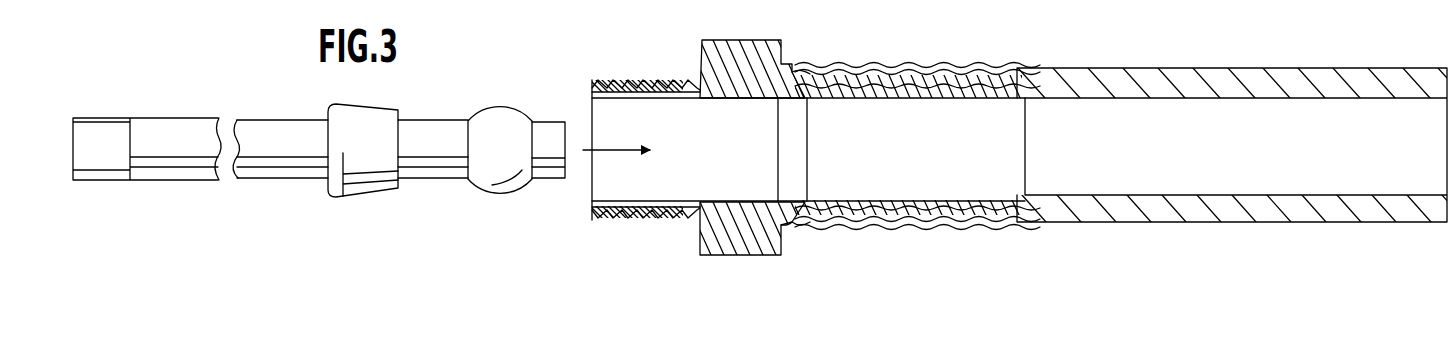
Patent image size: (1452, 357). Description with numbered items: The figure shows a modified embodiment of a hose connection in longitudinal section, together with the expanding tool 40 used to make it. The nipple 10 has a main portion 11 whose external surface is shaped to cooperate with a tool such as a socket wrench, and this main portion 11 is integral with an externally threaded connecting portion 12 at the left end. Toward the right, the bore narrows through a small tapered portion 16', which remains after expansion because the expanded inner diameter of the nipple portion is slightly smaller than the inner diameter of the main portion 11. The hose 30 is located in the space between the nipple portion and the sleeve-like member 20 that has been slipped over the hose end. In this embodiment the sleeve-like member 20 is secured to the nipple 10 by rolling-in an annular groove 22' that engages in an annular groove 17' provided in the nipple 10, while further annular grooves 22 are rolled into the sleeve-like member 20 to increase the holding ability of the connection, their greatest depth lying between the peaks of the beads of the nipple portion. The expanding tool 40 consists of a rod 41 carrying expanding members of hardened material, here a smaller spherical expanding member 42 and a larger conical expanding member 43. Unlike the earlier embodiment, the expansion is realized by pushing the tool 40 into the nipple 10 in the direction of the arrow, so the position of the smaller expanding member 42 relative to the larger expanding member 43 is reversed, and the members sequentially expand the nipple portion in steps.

The nipple 10 is at (763, 37).
The main portion 11 is at (701, 52).
The externally threaded connecting portion 12 is at (631, 78).
The small tapered portion 16' is at (764, 149).
The annular groove 17' is at (786, 256).
The sleeve-like member 20 is at (1023, 60).
The rolled-in annular grooves 22 is at (915, 119).
The rolled-in annular groove 22' is at (826, 124).
The hose 30 is at (1111, 64).
The expanding tool 40 is at (434, 113).
The rod 41 is at (209, 117).
The smaller expanding member 42 is at (513, 120).
The larger expanding member 43 is at (361, 117).